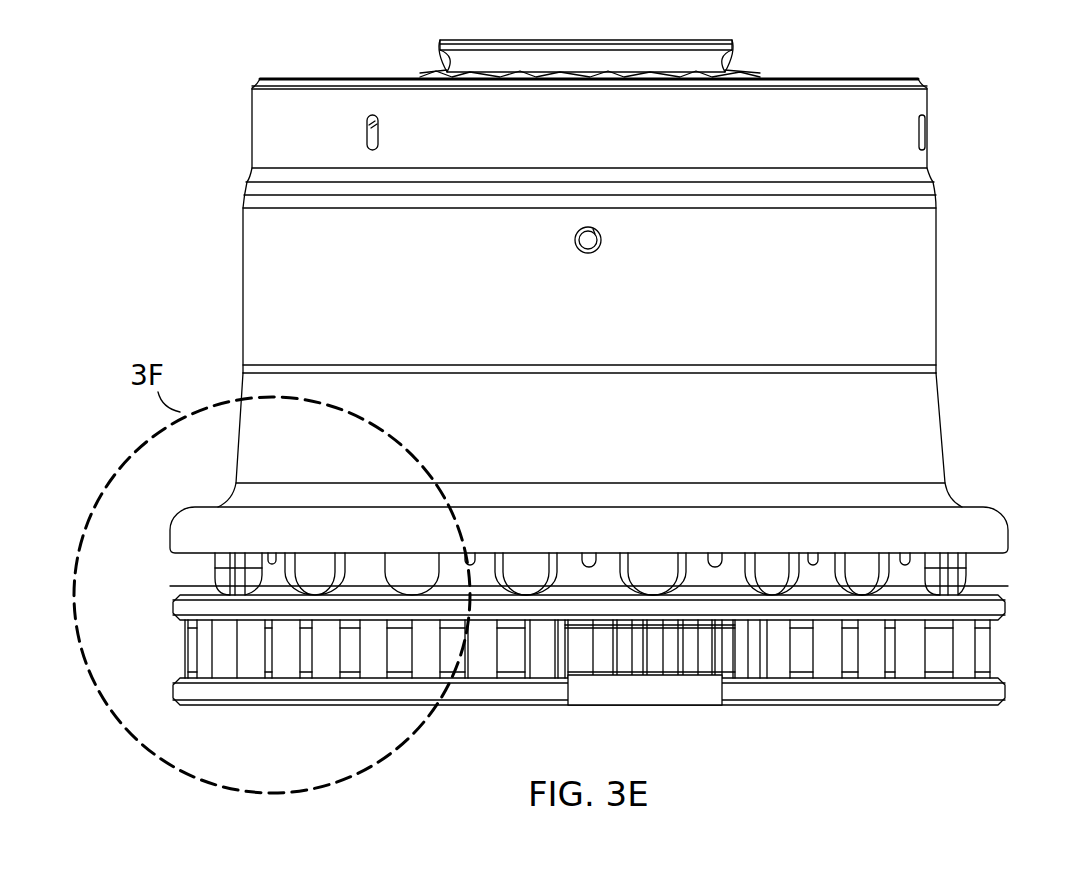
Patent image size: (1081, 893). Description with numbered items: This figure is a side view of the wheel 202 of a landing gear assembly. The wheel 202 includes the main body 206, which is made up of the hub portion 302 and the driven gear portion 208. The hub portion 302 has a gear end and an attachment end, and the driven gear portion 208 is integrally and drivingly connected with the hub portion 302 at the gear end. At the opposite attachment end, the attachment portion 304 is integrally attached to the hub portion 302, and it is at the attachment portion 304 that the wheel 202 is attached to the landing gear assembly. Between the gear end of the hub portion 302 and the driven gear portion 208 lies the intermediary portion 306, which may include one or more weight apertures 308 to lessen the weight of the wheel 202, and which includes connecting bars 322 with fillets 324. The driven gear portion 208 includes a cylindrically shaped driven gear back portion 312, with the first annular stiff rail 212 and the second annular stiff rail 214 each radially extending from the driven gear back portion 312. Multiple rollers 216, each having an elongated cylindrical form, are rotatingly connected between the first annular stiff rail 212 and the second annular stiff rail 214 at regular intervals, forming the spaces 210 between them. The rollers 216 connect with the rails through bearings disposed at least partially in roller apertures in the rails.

The wheel 202 is at (960, 155).
The main body 206 is at (937, 256).
The driven gear portion 208 is at (650, 693).
The spaces 210 is at (575, 663).
The first annular stiff rail 212 is at (1005, 605).
The second annular stiff rail 214 is at (482, 692).
The rollers 216 is at (965, 652).
The hub portion 302 is at (937, 311).
The attachment portion 304 is at (735, 50).
The intermediary portion 306 is at (912, 560).
The weight apertures 308 is at (858, 558).
The driven gear back portion 312 is at (777, 663).
The connecting bars 322 is at (733, 565).
The fillets 324 is at (575, 565).